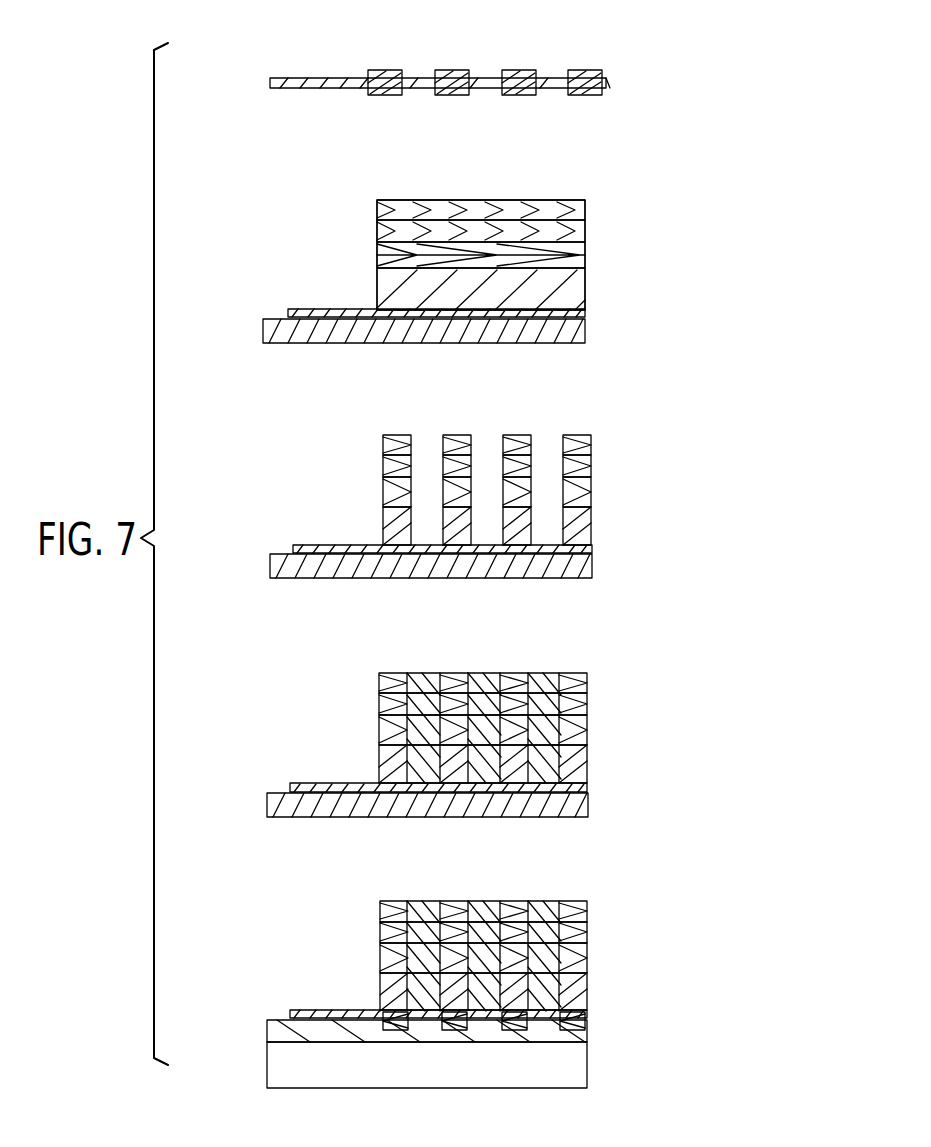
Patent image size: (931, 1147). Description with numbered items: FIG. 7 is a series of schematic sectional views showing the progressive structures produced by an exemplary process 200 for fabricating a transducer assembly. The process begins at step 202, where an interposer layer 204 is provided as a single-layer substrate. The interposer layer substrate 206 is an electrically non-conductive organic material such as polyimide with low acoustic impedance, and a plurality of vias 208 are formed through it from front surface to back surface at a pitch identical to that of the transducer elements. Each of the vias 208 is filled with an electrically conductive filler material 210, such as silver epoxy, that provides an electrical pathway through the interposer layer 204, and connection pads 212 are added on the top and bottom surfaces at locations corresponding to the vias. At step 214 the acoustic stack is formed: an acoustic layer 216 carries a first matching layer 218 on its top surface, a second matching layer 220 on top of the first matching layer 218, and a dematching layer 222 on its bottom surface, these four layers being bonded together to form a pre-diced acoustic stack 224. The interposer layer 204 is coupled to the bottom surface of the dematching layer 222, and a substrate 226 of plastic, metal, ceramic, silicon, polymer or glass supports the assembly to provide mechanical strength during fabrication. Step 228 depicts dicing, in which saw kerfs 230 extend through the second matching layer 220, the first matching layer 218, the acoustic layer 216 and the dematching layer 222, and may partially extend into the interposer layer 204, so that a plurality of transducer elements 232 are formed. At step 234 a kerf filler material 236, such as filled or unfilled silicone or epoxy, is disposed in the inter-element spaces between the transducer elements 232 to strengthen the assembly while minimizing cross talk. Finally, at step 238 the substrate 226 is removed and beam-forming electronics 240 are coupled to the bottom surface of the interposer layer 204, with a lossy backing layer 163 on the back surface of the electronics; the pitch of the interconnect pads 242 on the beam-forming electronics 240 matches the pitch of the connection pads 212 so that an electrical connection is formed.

The lossy backing layer 163 is at (588, 1062).
The process 200 is at (703, 115).
The step 202 is at (590, 40).
The interposer layer 204 is at (285, 98).
The interposer layer substrate 206 is at (283, 78).
The vias 208 is at (470, 73).
The electrically conductive filler material 210 is at (373, 85).
The connection pads 212 is at (455, 95).
The step 214 is at (583, 175).
The acoustic layer 216 is at (587, 255).
The first matching layer 218 is at (377, 227).
The second matching layer 220 is at (585, 205).
The dematching layer 222 is at (377, 292).
The pre-diced acoustic stack 224 is at (350, 180).
The substrate 226 is at (263, 330).
The step 228 is at (587, 403).
The saw kerfs 230 is at (485, 442).
The transducer elements 232 is at (398, 442).
The step 234 is at (585, 642).
The kerf filler material 236 is at (425, 677).
The step 238 is at (578, 882).
The beam-forming electronics 240 is at (360, 1045).
The interconnect pads 242 is at (565, 1032).